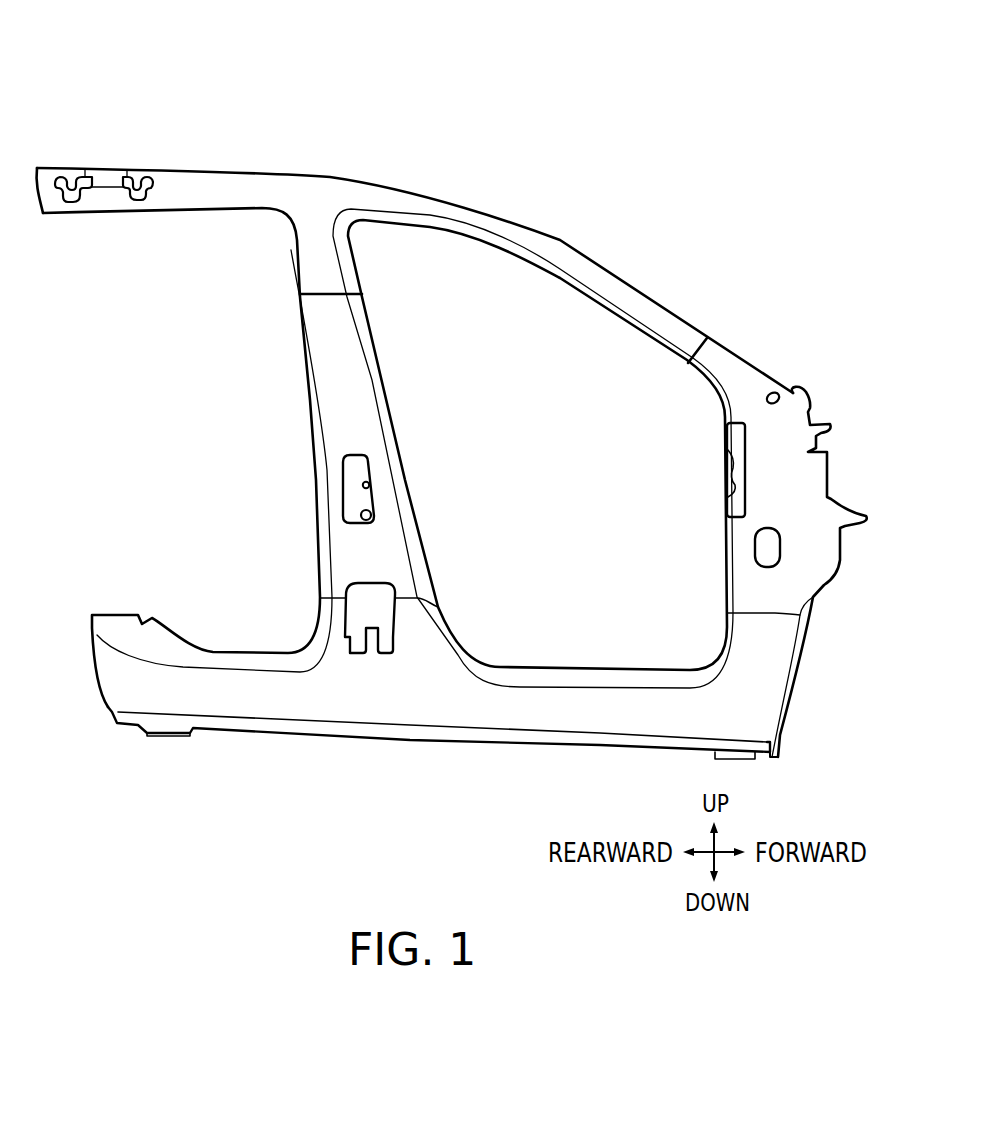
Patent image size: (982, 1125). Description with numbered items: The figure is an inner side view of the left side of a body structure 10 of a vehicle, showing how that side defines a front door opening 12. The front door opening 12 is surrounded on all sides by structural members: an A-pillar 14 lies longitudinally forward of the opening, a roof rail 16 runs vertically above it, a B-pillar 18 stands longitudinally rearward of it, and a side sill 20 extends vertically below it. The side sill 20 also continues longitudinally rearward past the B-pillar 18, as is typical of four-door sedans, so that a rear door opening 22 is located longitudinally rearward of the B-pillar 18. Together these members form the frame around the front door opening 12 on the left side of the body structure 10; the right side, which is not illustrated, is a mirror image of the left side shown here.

The body structure 10 is at (556, 90).
The front door opening 12 is at (568, 496).
The A-pillar 14 is at (770, 482).
The roof rail 16 is at (427, 207).
The B-pillar 18 is at (348, 454).
The side sill 20 is at (551, 742).
The rear door opening 22 is at (231, 419).